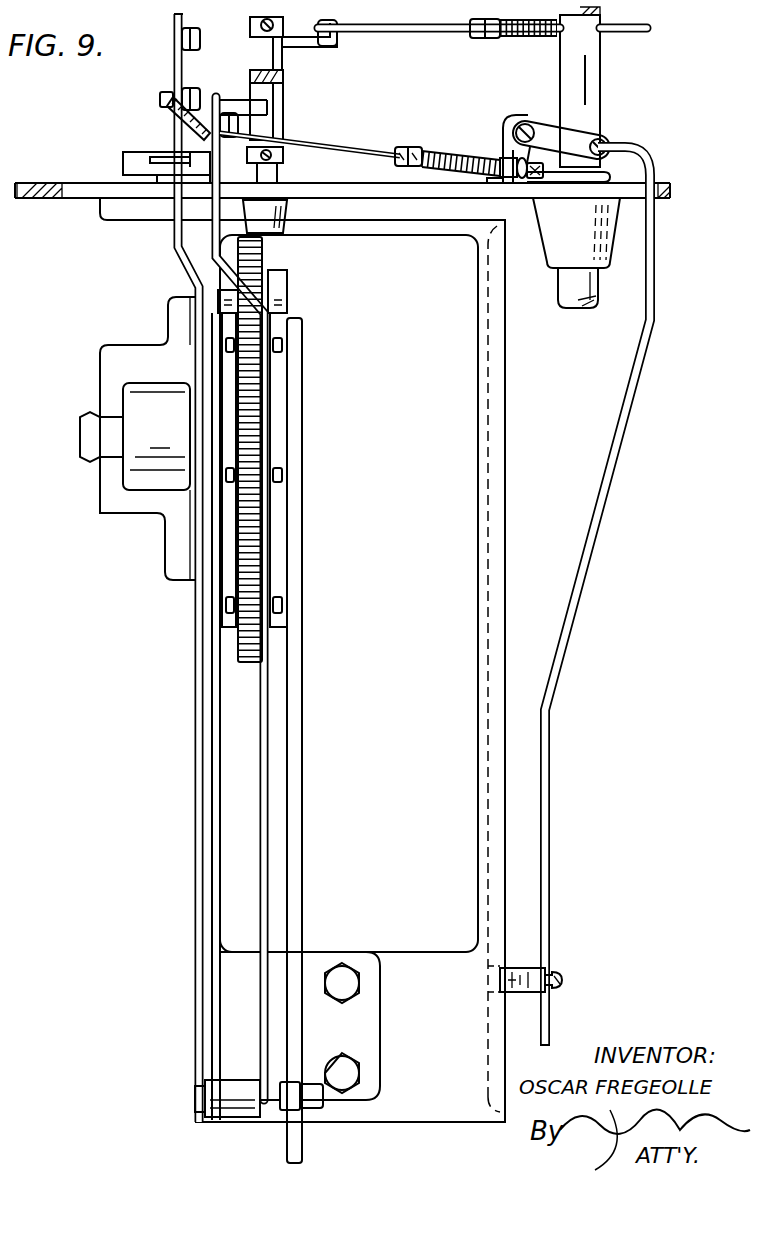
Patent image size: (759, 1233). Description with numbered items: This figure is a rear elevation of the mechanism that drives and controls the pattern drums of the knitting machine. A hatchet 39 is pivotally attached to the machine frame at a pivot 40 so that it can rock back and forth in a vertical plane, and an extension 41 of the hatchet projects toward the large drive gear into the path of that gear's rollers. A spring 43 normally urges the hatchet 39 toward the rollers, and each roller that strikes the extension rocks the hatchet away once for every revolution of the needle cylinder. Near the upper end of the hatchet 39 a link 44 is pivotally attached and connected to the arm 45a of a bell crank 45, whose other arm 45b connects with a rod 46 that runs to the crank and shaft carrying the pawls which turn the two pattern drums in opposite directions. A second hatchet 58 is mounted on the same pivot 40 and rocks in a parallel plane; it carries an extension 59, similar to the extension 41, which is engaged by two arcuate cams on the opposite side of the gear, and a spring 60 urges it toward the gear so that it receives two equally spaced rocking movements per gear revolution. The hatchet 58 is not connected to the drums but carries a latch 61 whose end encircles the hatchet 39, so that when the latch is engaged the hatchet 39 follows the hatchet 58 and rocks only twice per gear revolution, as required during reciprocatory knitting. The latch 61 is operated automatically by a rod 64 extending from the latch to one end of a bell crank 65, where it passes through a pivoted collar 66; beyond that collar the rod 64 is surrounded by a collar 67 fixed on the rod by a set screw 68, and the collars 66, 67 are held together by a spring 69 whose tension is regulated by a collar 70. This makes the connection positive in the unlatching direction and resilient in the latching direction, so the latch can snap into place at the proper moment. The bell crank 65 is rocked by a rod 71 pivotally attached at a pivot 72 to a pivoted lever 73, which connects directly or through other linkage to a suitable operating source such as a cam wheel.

The hatchet 39 is at (172, 74).
The pivot 40 is at (195, 1098).
The extension 41 is at (222, 612).
The spring 43 is at (166, 118).
The link 44 is at (188, 86).
The bell crank 45 is at (296, 72).
The arm 45a is at (240, 108).
The arm 45b is at (302, 42).
The rod 46 is at (404, 32).
The second hatchet 58 is at (262, 415).
The extension 59 is at (274, 440).
The spring 60 is at (236, 128).
The latch 61 is at (190, 146).
The rod 64 is at (368, 138).
The bell crank 65 is at (548, 126).
The pivoted collar 66 is at (520, 184).
The collar 67 is at (532, 184).
The set screw 68 is at (538, 178).
The spring 69 is at (454, 160).
The collar 70 is at (414, 147).
The rod 71 is at (652, 360).
The pivot 72 is at (556, 970).
The pivoted lever 73 is at (512, 968).